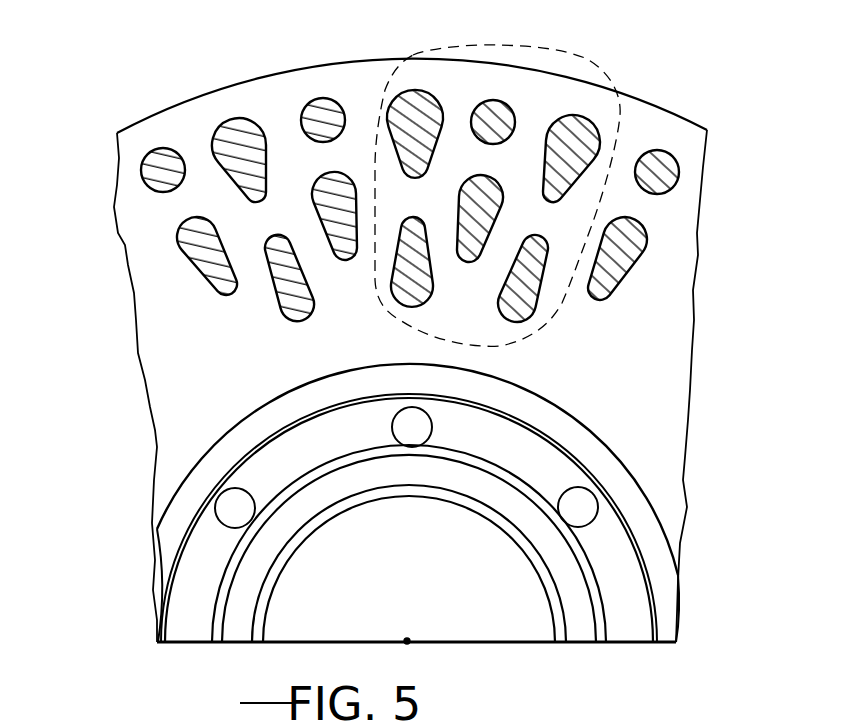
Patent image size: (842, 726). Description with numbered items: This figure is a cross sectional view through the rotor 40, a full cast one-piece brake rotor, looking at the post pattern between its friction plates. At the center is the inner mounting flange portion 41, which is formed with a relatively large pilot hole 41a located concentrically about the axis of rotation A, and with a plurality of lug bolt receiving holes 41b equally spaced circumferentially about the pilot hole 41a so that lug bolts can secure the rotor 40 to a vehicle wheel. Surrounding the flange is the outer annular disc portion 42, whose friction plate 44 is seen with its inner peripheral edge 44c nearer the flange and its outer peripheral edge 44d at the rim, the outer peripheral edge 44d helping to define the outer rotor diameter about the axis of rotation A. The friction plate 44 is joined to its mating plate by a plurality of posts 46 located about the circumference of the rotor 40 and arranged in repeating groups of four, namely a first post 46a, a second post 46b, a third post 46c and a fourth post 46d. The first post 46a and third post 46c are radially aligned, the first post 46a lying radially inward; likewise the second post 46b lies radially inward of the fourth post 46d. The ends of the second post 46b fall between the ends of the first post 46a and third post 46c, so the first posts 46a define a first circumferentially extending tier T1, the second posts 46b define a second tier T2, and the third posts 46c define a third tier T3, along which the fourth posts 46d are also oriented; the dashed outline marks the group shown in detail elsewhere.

The rotor 40 is at (114, 118).
The inner mounting flange portion 41 is at (602, 655).
The pilot hole 41a is at (330, 521).
The lug bolt receiving holes 41b is at (395, 432).
The outer annular disc portion 42 is at (700, 300).
The friction plate 44 is at (665, 422).
The inner peripheral edge 44c is at (530, 400).
The outer peripheral edge 44d is at (394, 66).
The posts 46 is at (274, 360).
The first post 46a is at (309, 318).
The second post 46b is at (222, 296).
The third post 46c is at (240, 117).
The fourth post 46d is at (155, 148).
The axis of rotation A is at (407, 640).
The first circumferentially extending tier T1 is at (188, 325).
The second circumferentially extending tier T2 is at (175, 277).
The third circumferentially extending tier T3 is at (205, 188).